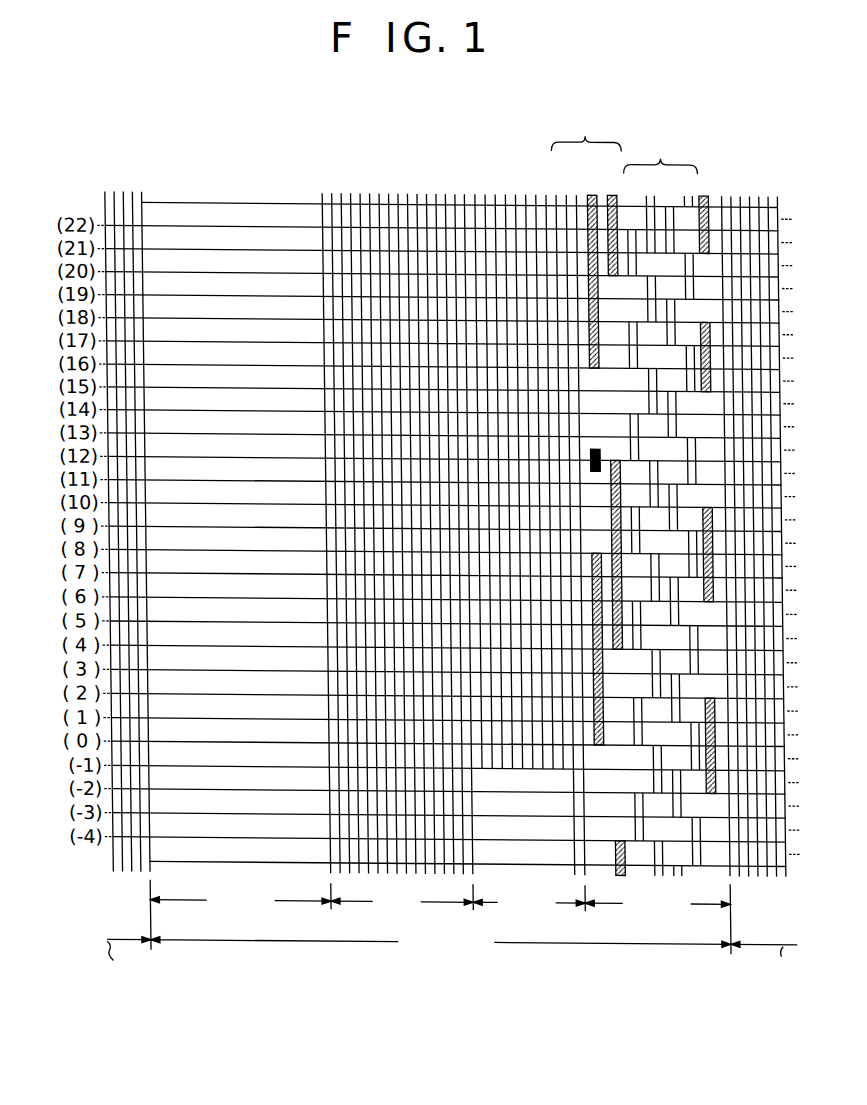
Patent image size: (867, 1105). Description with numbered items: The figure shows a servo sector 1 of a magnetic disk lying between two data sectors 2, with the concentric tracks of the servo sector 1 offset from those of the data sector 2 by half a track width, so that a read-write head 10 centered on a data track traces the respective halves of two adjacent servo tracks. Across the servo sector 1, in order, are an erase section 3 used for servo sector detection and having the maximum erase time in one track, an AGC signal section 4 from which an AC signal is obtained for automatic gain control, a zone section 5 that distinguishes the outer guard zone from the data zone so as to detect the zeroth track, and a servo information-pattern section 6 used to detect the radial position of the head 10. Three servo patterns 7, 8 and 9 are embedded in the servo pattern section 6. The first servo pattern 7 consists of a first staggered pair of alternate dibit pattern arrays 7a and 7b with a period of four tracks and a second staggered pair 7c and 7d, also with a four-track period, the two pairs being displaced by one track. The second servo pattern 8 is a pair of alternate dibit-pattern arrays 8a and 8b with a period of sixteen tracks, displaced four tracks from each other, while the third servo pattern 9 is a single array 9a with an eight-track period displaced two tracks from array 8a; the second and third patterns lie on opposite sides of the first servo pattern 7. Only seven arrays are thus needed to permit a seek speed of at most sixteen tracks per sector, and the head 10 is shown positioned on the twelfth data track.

The servo sector 1 is at (482, 952).
The data sector 2 is at (134, 938).
The erase section 3 is at (278, 904).
The AGC signal section 4 is at (366, 902).
The zone section 5 is at (553, 904).
The servo information-pattern section 6 is at (684, 904).
The first servo pattern 7 is at (660, 164).
The dibit pattern array 7a is at (648, 222).
The dibit pattern array 7b is at (667, 233).
The dibit pattern array 7c is at (668, 247).
The dibit pattern array 7d is at (688, 224).
The second servo pattern 8 is at (586, 133).
The dibit-pattern array 8a is at (590, 192).
The dibit-pattern array 8b is at (613, 192).
The third servo pattern 9 is at (703, 191).
The dibit-pattern array 9a is at (710, 196).
The read-write head 10 is at (595, 441).